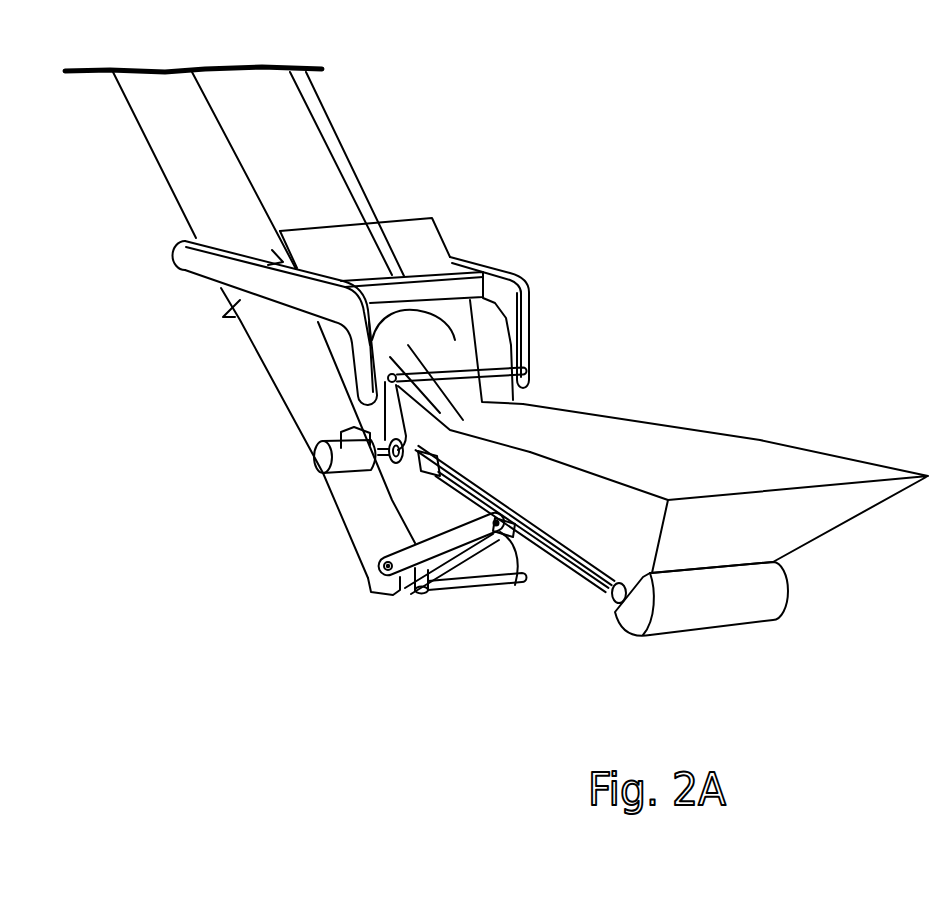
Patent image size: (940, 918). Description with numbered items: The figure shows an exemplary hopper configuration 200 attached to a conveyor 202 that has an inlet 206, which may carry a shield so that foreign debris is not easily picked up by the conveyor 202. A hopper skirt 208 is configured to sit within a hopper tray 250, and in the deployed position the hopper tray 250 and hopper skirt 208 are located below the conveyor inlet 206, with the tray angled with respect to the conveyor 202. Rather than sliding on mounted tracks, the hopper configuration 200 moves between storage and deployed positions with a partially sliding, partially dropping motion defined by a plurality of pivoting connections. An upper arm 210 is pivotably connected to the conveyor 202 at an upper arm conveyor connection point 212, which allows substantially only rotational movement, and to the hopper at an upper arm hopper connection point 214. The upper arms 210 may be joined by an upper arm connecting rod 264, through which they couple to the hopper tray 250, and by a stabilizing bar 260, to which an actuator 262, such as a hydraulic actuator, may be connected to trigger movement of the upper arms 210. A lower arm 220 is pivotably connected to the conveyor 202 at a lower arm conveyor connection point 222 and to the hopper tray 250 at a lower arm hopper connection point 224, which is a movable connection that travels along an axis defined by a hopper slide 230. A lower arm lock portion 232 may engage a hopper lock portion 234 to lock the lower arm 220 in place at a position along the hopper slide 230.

The hopper configuration 200 is at (648, 164).
The conveyor 202 is at (283, 142).
The conveyor inlet 206 is at (370, 342).
The hopper skirt 208 is at (748, 463).
The upper arm 210 is at (232, 268).
The upper arm conveyor connection point 212 is at (176, 268).
The upper arm hopper connection point 214 is at (356, 388).
The lower arm 220 is at (437, 547).
The lower arm conveyor connection point 222 is at (376, 570).
The lower arm hopper connection point 224 is at (494, 530).
The hopper slide 230 is at (480, 486).
The lower arm lock portion 232 is at (498, 535).
The hopper lock portion 234 is at (605, 612).
The hopper tray 250 is at (400, 473).
The stabilizing bar 260 is at (452, 287).
The actuator 262 is at (404, 266).
The upper arm connecting rod 264 is at (470, 371).